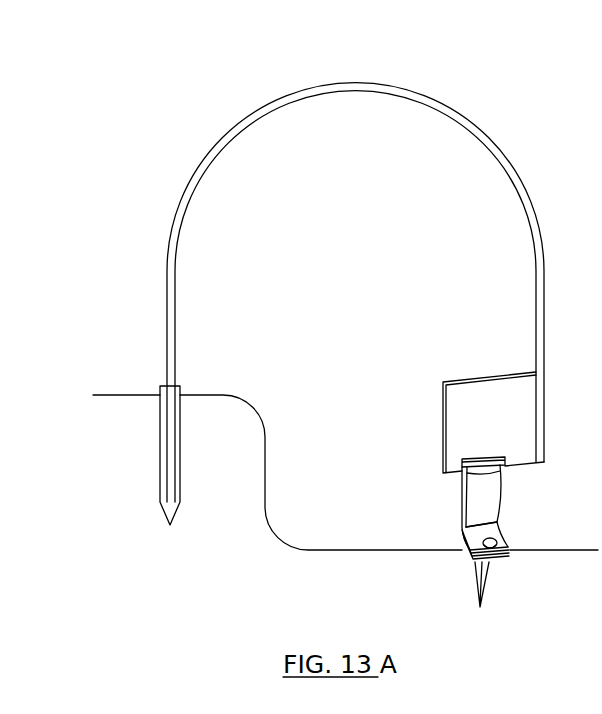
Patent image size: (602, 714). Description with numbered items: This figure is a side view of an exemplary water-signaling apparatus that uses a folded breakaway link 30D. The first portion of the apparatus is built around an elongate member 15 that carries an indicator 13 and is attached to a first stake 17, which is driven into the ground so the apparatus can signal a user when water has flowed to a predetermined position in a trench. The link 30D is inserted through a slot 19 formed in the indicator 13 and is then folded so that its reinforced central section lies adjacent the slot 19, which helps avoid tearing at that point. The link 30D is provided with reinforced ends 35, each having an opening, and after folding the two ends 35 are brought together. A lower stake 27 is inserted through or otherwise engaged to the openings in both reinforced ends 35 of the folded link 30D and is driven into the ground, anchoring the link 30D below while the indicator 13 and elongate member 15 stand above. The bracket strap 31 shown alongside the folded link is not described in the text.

The elongate member 15 is at (410, 89).
The first stake 17 is at (168, 462).
The indicator 13 is at (480, 388).
The folded link 30D is at (450, 504).
The slot 19 is at (478, 457).
The bracket strap 31 is at (488, 499).
The reinforced ends 35 is at (496, 471).
The lower stake 27 is at (484, 584).